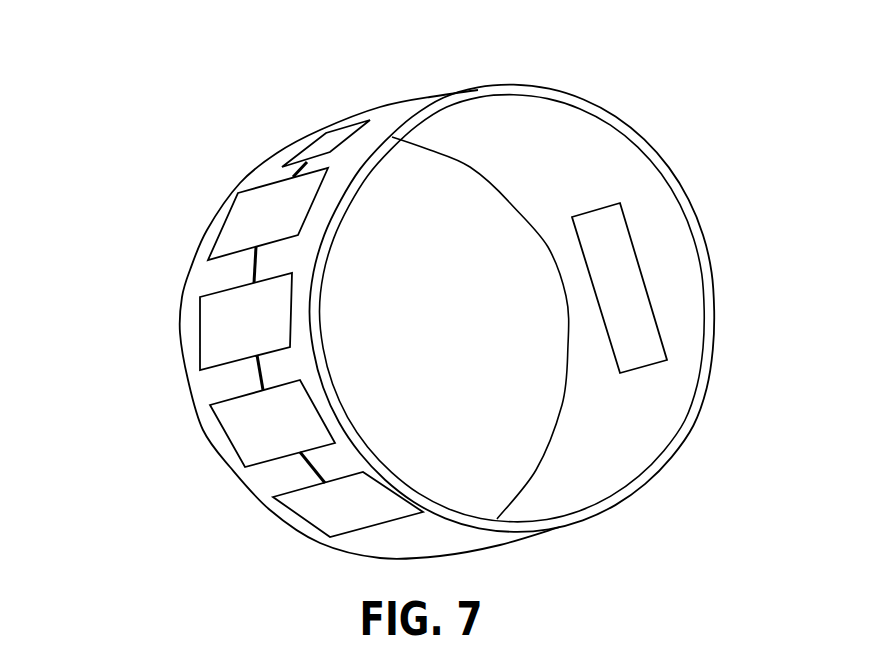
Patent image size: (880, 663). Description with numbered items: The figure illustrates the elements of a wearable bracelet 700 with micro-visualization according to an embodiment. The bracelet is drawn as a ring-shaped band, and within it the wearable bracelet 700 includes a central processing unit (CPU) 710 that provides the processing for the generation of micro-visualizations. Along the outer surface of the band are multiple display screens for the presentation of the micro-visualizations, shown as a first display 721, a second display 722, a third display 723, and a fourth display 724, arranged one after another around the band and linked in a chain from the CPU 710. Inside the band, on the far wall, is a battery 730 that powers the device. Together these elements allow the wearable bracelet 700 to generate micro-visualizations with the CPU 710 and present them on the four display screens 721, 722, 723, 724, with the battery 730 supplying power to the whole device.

The wearable bracelet 700 is at (607, 118).
The central processing unit (CPU) 710 is at (330, 138).
The Display-1 721 is at (243, 219).
The Display-2 722 is at (220, 325).
The Display-3 723 is at (243, 428).
The Display-4 724 is at (323, 515).
The battery 730 is at (619, 258).